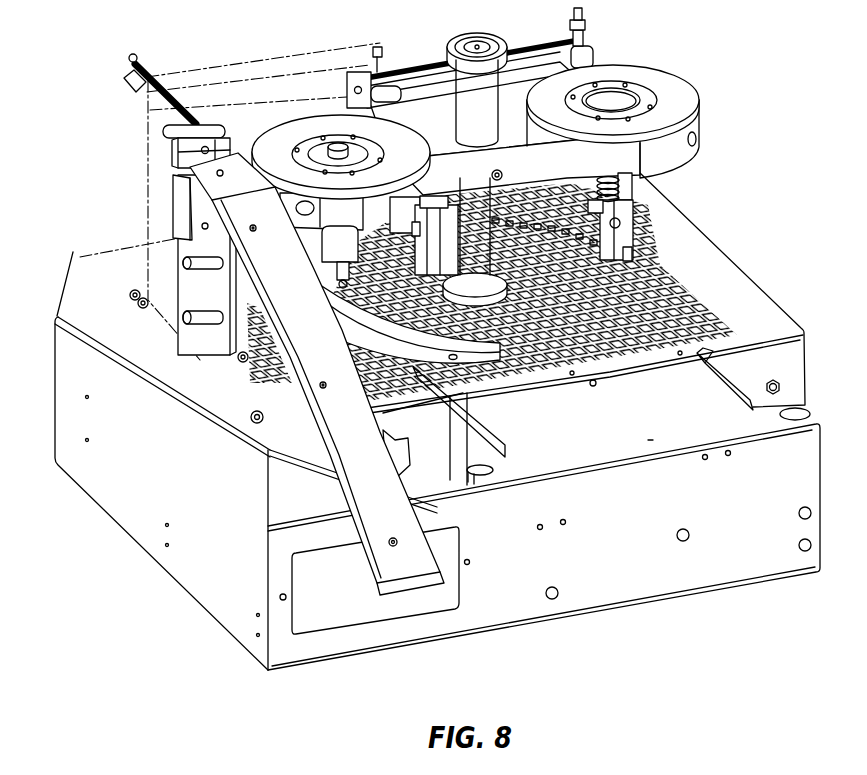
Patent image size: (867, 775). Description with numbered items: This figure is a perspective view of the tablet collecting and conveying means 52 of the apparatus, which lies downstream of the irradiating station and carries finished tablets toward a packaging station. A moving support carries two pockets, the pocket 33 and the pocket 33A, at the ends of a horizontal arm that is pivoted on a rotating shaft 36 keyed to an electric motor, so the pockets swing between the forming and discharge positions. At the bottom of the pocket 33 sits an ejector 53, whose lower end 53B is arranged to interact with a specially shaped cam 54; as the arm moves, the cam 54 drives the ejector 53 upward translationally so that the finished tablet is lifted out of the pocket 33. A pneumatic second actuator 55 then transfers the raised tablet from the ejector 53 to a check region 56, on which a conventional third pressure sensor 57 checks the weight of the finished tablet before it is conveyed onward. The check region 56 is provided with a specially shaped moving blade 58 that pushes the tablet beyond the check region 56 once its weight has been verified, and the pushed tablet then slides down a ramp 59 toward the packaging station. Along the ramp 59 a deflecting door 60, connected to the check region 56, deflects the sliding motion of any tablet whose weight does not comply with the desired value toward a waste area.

The pocket 33 is at (290, 133).
The pocket 33A is at (672, 153).
The rotating shaft 36 is at (480, 265).
The tablet collecting and conveying means 52 is at (133, 77).
The ejector 53 is at (337, 150).
The lower end of the ejector 53B is at (620, 257).
The cam 54 is at (517, 117).
The second actuator 55 is at (417, 87).
The check region 56 is at (173, 157).
The third pressure sensor 57 is at (190, 200).
The moving blade 58 is at (220, 147).
The ramp 59 is at (355, 478).
The deflecting door 60 is at (378, 417).